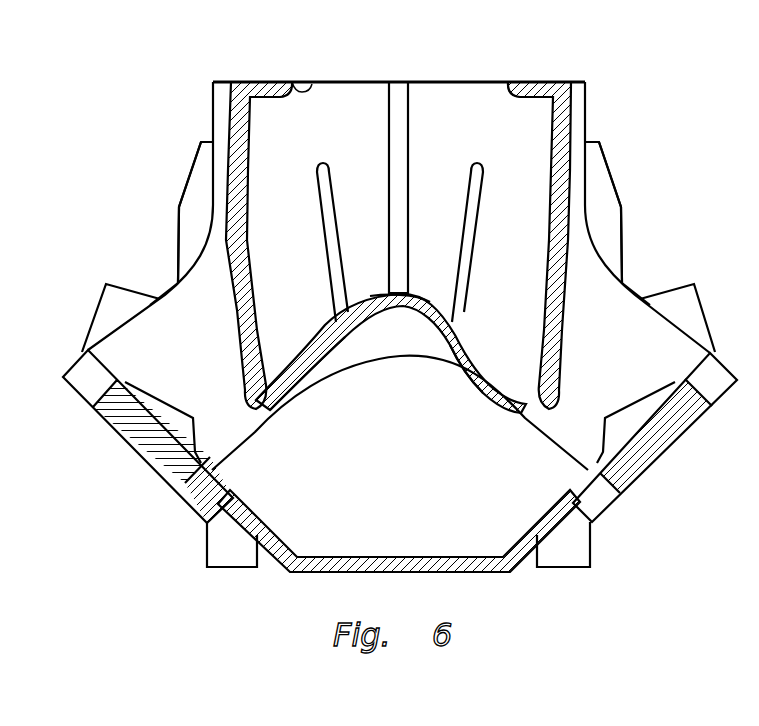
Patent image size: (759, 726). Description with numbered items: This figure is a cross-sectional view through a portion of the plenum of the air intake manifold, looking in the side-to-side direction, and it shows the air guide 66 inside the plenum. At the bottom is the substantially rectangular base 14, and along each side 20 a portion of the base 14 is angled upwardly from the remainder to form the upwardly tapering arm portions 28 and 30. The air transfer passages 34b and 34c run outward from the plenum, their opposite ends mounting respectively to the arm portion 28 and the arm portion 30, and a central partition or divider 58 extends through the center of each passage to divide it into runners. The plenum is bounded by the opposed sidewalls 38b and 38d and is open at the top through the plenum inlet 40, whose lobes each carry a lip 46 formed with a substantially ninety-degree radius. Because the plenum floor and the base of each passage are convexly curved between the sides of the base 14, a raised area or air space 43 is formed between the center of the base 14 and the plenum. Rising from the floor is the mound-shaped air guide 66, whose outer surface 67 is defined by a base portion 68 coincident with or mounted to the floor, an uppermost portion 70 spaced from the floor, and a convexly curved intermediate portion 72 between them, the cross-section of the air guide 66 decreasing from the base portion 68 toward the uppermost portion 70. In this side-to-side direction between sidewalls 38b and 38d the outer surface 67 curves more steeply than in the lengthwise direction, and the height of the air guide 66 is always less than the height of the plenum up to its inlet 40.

The base 14 is at (264, 593).
The side 20 is at (66, 366).
The arm portion 28 is at (124, 440).
The arm portion 30 is at (697, 428).
The air transfer passage 34b is at (145, 264).
The air transfer passage 34c is at (642, 284).
The plenum sidewall 38b is at (246, 207).
The plenum sidewall 38d is at (548, 203).
The plenum inlet 40 is at (402, 78).
The raised area or air space 43 is at (414, 494).
The lip 46 is at (300, 90).
The central partition or divider 58 is at (323, 164).
The air guide 66 is at (402, 336).
The outer surface 67 is at (488, 338).
The base portion 68 is at (300, 374).
The uppermost portion 70 is at (413, 291).
The intermediate portion 72 is at (330, 330).